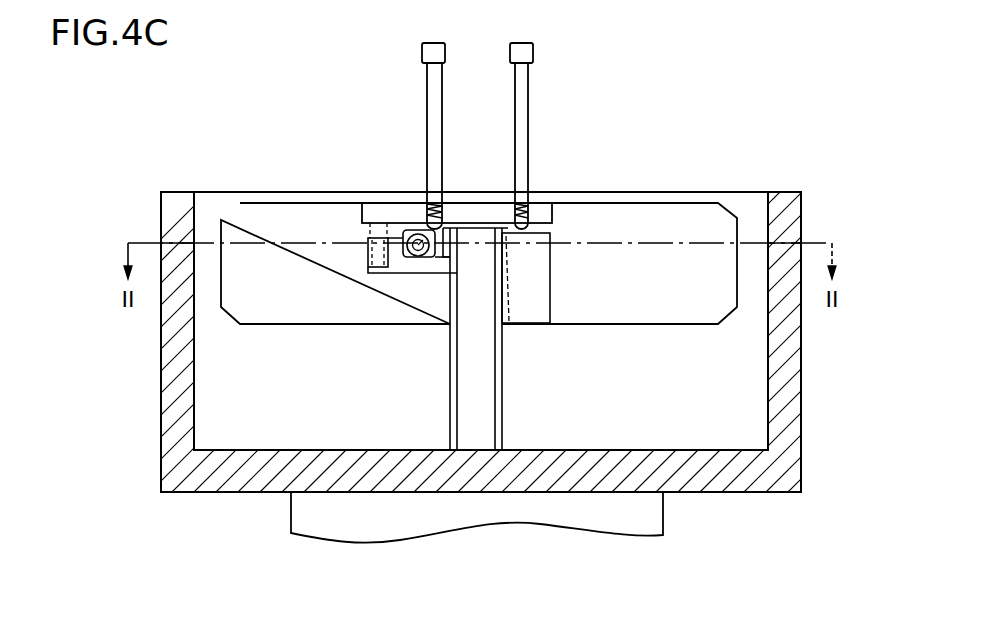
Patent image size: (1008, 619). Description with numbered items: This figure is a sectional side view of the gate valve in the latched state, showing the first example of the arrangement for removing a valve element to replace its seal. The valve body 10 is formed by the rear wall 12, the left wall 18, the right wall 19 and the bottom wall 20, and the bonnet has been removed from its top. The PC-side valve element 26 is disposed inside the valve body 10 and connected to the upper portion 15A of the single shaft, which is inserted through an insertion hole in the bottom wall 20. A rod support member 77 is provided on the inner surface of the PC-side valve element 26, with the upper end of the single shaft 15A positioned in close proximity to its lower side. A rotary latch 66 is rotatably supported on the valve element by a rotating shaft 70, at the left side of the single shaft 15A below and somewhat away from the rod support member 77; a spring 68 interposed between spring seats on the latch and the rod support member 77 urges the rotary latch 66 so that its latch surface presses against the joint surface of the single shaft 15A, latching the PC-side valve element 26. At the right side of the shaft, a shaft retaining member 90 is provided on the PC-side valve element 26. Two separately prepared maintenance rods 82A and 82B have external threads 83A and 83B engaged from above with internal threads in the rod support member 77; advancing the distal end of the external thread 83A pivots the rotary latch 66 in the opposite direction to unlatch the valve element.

The valve body 10 is at (157, 498).
The rear wall 12 is at (746, 191).
The upper portion of single shaft 15A is at (510, 428).
The left wall 18 is at (172, 420).
The right wall 19 is at (792, 382).
The bottom wall 20 is at (256, 477).
The PC-side valve element 26 is at (658, 196).
The rotary latch 66 is at (420, 275).
The spring 68 is at (370, 254).
The rotating shaft 70 is at (410, 258).
The rod support member 77 is at (542, 213).
The maintenance rod 82A is at (437, 97).
The maintenance rod 82B is at (528, 101).
The external thread 83A is at (430, 208).
The external thread 83B is at (518, 210).
The shaft retaining member 90 is at (522, 258).